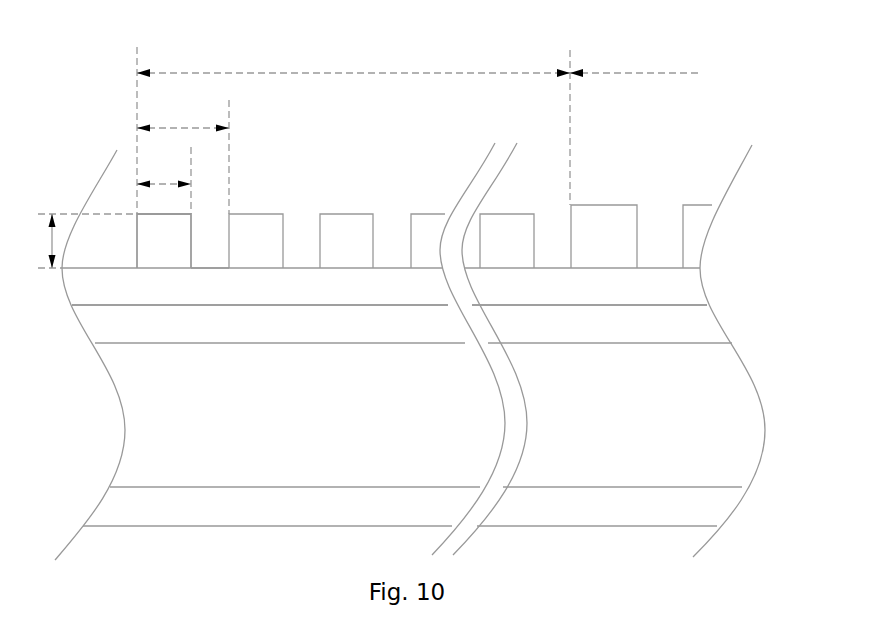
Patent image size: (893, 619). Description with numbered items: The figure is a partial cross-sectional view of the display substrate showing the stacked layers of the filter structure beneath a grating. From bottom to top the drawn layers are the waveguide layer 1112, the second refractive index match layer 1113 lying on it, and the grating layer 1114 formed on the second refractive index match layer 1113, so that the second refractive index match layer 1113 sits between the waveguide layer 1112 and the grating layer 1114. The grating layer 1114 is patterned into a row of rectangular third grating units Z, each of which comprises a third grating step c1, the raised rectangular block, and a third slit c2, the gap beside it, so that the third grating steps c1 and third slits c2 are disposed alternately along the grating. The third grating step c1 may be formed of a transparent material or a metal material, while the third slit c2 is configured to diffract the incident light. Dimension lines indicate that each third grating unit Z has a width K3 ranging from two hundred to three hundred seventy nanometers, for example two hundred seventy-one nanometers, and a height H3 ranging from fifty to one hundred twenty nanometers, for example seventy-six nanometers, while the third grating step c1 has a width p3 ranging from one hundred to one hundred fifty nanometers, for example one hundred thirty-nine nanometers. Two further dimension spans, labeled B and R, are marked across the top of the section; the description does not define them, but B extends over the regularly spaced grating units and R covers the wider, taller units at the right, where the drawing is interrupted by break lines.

The waveguide layer 1112 is at (677, 325).
The second refractive index match layer 1113 is at (665, 285).
The grating layer 1114 is at (710, 228).
The third grating step c1 is at (175, 232).
The third slit c2 is at (208, 253).
The third grating unit Z is at (182, 131).
The dimension B is at (353, 130).
The dimension R is at (636, 61).
The width of third grating unit K3 is at (183, 155).
The width of third grating step p3 is at (164, 180).
The height of third grating unit H3 is at (79, 241).